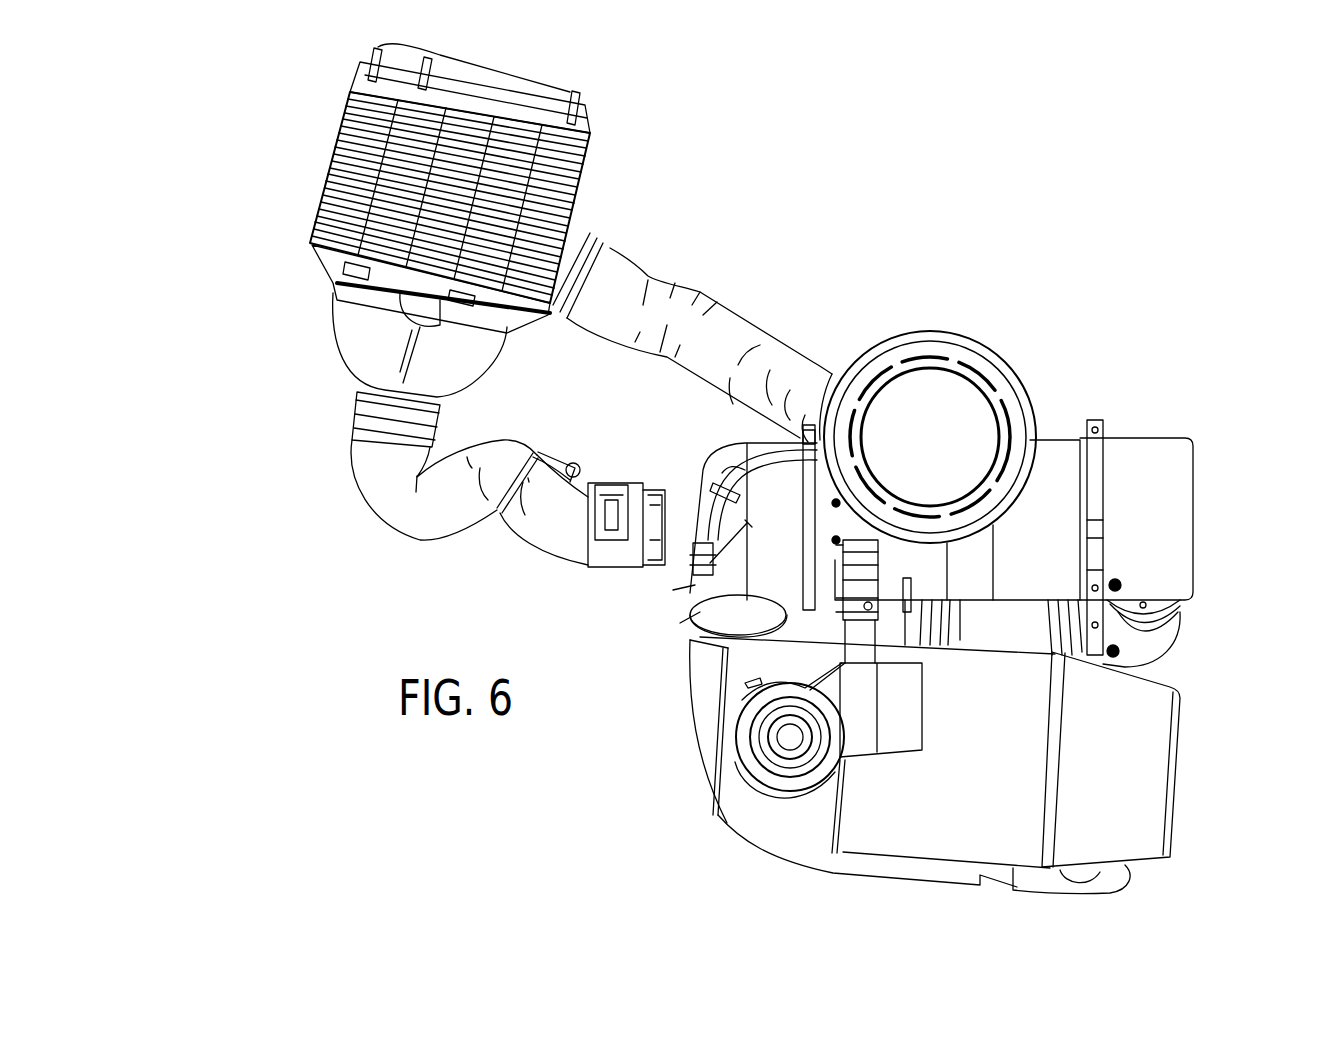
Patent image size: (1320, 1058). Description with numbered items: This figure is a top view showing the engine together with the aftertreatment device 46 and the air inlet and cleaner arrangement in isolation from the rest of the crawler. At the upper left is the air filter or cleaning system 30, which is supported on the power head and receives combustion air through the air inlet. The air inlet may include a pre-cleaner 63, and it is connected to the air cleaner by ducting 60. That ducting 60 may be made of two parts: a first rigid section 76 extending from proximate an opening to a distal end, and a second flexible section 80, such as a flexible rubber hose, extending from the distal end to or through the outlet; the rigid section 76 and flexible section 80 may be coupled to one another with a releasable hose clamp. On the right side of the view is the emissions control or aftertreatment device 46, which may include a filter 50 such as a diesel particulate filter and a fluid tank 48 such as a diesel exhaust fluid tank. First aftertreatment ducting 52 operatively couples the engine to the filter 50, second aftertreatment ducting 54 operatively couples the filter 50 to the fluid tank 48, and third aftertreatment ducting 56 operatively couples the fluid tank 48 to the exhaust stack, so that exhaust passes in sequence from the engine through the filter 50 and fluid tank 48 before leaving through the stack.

The air filter or cleaning system 30 is at (342, 150).
The second flexible section 80 is at (700, 288).
The ducting 60 is at (809, 362).
The first rigid section 76 is at (846, 355).
The pre-cleaner 63 is at (938, 390).
The filter 50 is at (1132, 450).
The first aftertreatment ducting 52 is at (1150, 647).
The aftertreatment device 46 is at (1202, 760).
The fluid tank 48 is at (1142, 842).
The second aftertreatment ducting 54 is at (707, 727).
The third aftertreatment ducting 56 is at (787, 806).